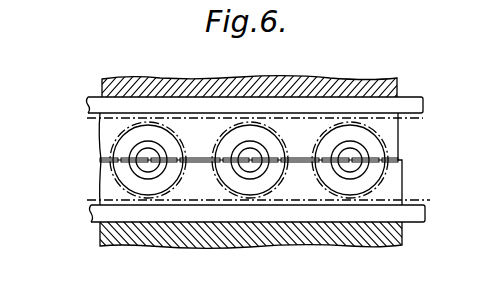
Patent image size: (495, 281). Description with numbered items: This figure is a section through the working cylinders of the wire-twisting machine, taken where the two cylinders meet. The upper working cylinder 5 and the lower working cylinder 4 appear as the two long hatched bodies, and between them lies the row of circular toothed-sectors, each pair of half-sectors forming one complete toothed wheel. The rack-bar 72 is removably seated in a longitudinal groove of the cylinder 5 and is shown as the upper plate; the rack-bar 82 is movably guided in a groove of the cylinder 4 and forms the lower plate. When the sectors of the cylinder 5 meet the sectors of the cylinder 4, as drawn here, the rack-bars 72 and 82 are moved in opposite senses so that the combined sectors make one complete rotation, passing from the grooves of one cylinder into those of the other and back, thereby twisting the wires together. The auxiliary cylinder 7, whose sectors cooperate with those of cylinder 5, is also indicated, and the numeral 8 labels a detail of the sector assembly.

The working cylinder 5 is at (372, 80).
The rack-bar 72 is at (416, 100).
The auxiliary cylinder 7 is at (380, 147).
The roller bearing 8 is at (372, 178).
The rack-bar 82 is at (425, 212).
The working cylinder 4 is at (102, 236).